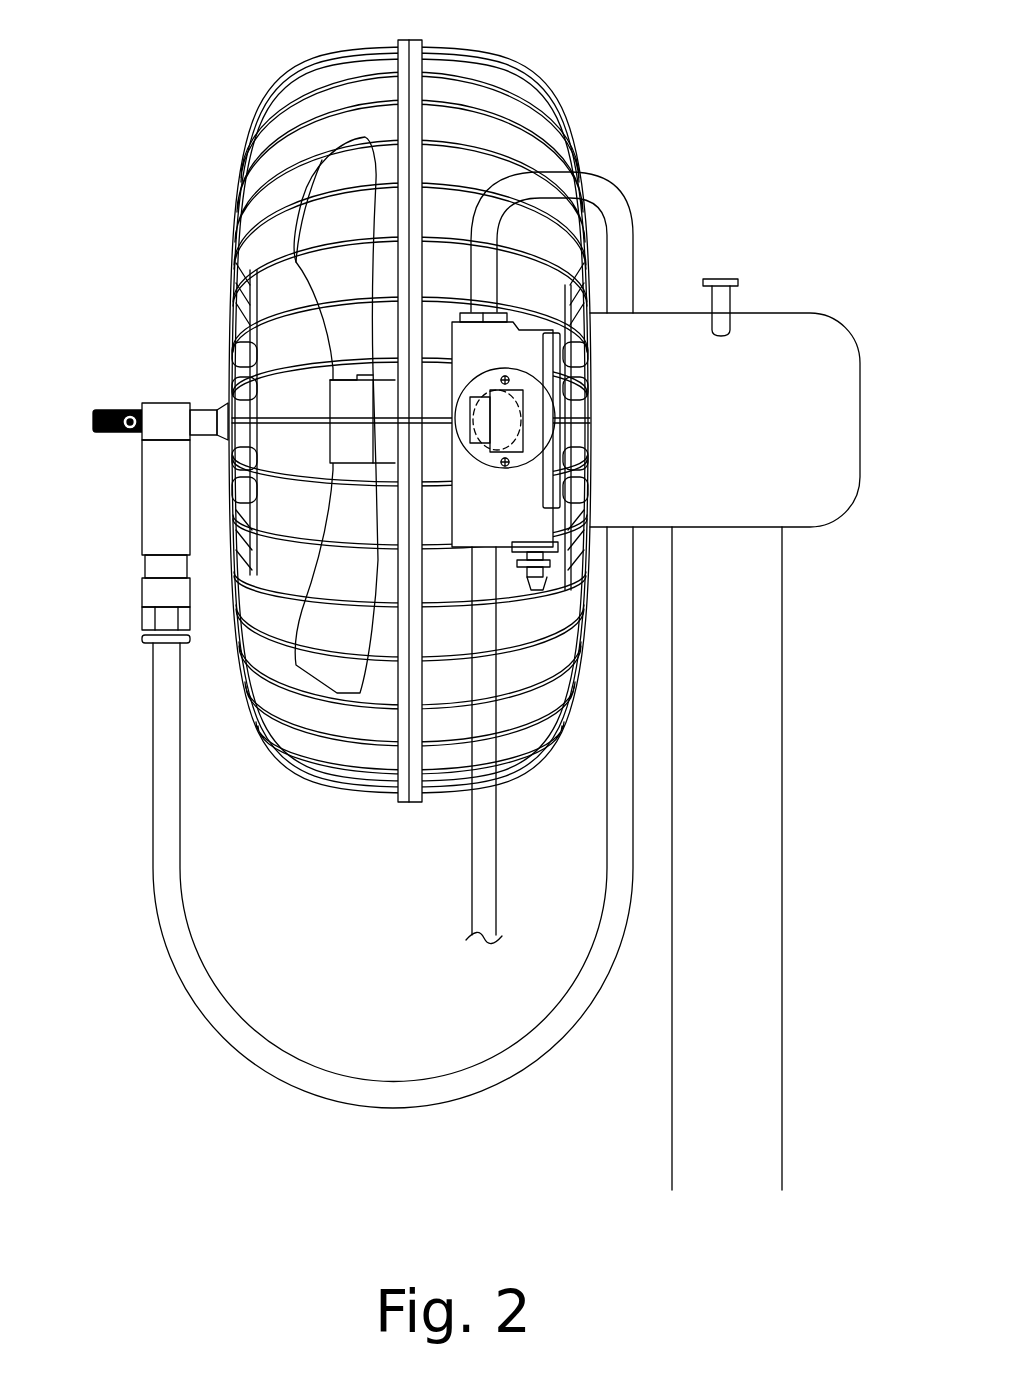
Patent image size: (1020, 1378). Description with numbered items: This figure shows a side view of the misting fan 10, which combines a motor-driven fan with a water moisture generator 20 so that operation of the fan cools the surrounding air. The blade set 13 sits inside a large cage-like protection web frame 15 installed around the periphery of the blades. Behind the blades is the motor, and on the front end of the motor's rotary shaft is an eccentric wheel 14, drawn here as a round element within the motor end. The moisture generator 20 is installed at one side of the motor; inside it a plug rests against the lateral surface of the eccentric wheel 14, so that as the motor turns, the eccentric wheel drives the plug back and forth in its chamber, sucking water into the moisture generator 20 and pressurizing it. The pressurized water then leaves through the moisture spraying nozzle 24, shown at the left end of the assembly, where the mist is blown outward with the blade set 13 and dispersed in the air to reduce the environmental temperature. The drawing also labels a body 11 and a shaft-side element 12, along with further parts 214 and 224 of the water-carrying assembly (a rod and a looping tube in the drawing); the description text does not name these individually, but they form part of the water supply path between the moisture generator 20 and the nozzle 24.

The fan 10 is at (681, 276).
The water tank 11 is at (777, 313).
The hub 12 is at (385, 410).
The blade set 13 is at (333, 173).
The eccentric wheel 14 is at (513, 400).
The fan guard 15 is at (340, 53).
The moisture generator 20 is at (507, 533).
The moisture spraying nozzle 24 is at (118, 410).
The support rod 214 is at (470, 850).
The tube 224 is at (610, 170).